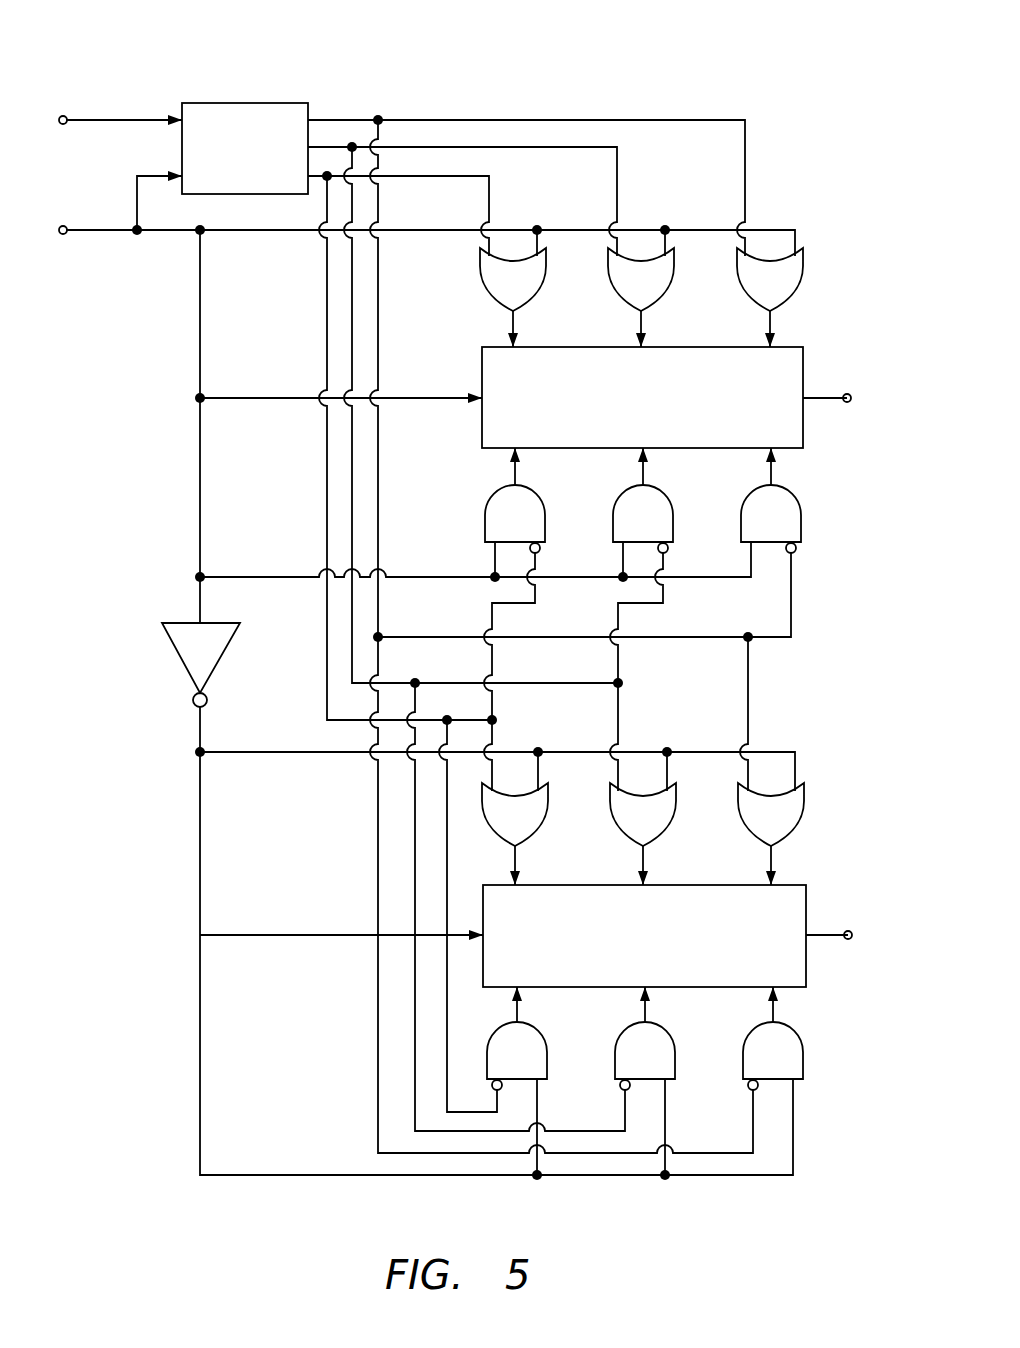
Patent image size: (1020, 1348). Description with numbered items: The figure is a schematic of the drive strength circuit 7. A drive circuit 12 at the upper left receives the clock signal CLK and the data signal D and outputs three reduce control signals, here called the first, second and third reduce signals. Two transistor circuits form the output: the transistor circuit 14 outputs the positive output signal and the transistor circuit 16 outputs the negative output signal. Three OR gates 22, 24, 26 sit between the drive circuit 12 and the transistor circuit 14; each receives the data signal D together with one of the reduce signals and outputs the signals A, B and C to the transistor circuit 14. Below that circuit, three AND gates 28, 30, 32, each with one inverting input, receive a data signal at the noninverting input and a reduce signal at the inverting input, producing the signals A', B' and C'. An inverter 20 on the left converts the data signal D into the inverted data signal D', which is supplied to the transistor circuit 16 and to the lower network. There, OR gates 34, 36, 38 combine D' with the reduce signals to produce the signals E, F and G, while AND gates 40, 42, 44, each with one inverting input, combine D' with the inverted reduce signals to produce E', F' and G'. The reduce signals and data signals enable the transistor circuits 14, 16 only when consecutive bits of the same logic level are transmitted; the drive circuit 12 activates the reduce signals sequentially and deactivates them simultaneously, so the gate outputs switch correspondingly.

The drive strength circuit 7 is at (676, 46).
The drive circuit 12 is at (227, 103).
The transistor circuit 14 is at (482, 375).
The transistor circuit 16 is at (808, 885).
The inverter 20 is at (183, 622).
The OR gate 22 is at (481, 283).
The OR gate 24 is at (610, 285).
The OR gate 26 is at (738, 286).
The AND gate 28 is at (490, 495).
The AND gate 30 is at (618, 495).
The AND gate 32 is at (748, 495).
The OR gate 34 is at (483, 818).
The OR gate 36 is at (612, 830).
The OR gate 38 is at (740, 830).
The AND gate 40 is at (540, 1030).
The AND gate 42 is at (668, 1028).
The AND gate 44 is at (797, 1028).